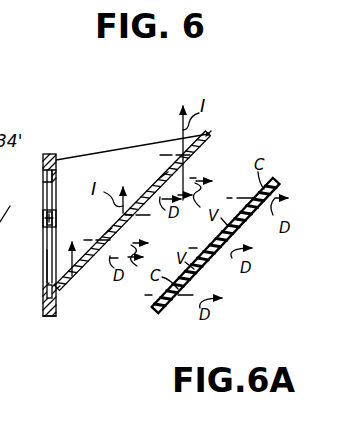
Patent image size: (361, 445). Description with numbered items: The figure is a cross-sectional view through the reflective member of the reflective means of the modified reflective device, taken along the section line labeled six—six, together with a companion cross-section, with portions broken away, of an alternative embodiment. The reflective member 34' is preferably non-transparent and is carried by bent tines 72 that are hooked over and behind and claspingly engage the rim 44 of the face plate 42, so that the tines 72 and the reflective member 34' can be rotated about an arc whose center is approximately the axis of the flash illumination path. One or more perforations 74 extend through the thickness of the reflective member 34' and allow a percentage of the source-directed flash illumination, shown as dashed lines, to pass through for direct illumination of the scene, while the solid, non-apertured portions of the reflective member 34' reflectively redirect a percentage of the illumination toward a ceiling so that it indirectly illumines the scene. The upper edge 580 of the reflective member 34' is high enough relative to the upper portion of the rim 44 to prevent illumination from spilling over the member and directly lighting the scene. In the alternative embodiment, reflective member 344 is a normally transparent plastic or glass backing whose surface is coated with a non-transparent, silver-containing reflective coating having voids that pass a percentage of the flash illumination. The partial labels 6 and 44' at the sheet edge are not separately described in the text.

In FIG. 6, the guide assembly 6 is at (104, 127).
In FIG. 6, the reflective member 34' is at (151, 210).
In FIG. 6, the rim 44 is at (30, 235).
In FIG. 6, the support bar wall 44' is at (23, 266).
In FIG. 6, the tines 72 is at (47, 219).
In FIG. 6, the perforations 74 is at (165, 176).
In FIG. 6, the face plate 42 is at (46, 317).
In FIG. 6, the upper edge 580 is at (213, 133).
In FIG. 6A, the reflective member 344 is at (243, 224).